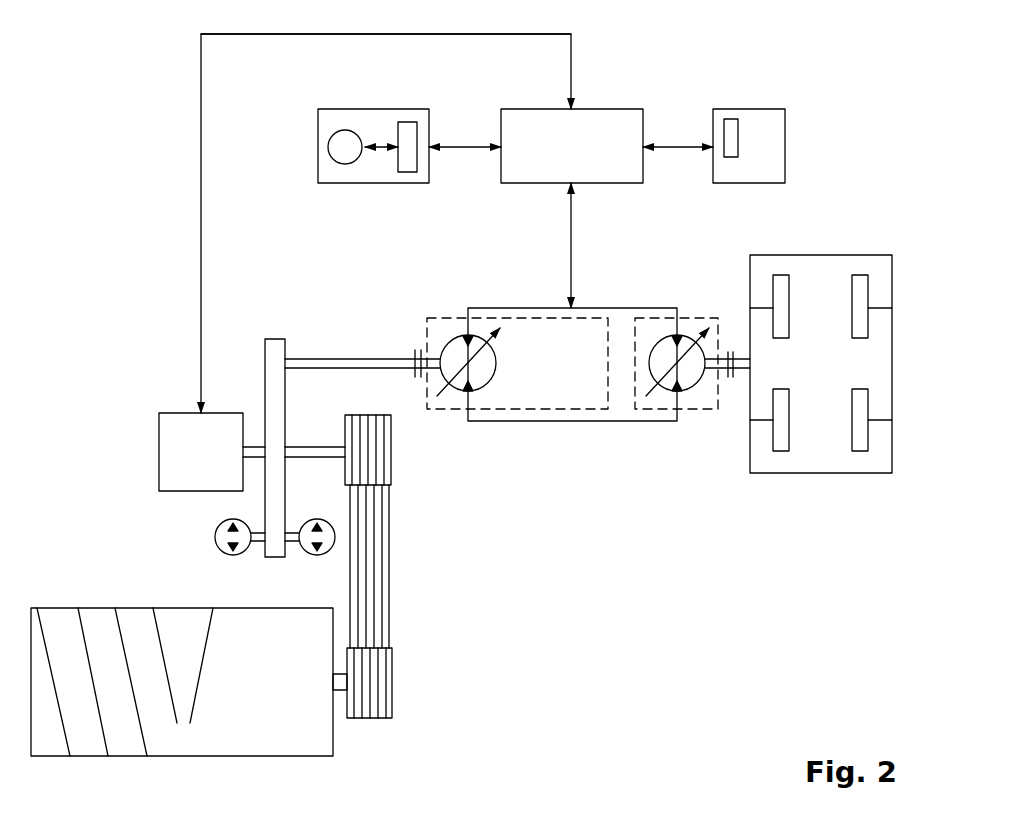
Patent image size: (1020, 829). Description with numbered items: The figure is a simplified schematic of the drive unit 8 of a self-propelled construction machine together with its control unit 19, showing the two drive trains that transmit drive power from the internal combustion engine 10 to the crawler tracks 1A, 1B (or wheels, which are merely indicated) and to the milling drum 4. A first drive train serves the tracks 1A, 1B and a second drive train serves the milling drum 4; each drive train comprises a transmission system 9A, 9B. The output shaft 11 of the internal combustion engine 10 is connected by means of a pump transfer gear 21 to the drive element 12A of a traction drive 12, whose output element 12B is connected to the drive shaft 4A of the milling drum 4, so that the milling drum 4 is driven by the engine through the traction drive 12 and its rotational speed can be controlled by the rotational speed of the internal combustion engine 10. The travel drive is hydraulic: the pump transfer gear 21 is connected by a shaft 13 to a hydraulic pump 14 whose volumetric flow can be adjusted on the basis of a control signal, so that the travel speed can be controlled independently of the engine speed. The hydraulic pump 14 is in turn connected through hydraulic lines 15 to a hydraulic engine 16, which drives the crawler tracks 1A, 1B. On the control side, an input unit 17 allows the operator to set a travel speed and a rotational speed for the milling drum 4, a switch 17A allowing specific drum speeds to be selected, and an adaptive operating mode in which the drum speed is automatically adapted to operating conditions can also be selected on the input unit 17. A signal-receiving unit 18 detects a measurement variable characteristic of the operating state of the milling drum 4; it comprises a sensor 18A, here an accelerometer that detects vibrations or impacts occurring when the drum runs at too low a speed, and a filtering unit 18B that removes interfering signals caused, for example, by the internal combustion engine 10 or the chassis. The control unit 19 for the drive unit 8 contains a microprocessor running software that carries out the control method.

The crawler track 1A is at (780, 275).
The crawler track 1B is at (780, 451).
The milling drum 4 is at (98, 597).
The drive shaft 4A is at (340, 693).
The drive unit 8 is at (118, 420).
The transmission system 9A is at (425, 559).
The transmission system 9B is at (447, 308).
The internal combustion engine 10 is at (175, 413).
The output shaft 11 is at (255, 445).
The traction drive 12 is at (393, 613).
The drive element 12A is at (391, 458).
The output element 12B is at (392, 680).
The shaft 13 is at (348, 358).
The hydraulic pump 14 is at (483, 388).
The hydraulic lines 15 is at (623, 308).
The hydraulic engine 16 is at (693, 388).
The input unit 17 is at (770, 109).
The switch 17A is at (727, 119).
The signal-receiving unit 18 is at (318, 145).
The sensor 18A is at (345, 130).
The filtering unit 18B is at (408, 122).
The control unit 19 is at (602, 109).
The pump transfer gear 21 is at (275, 338).